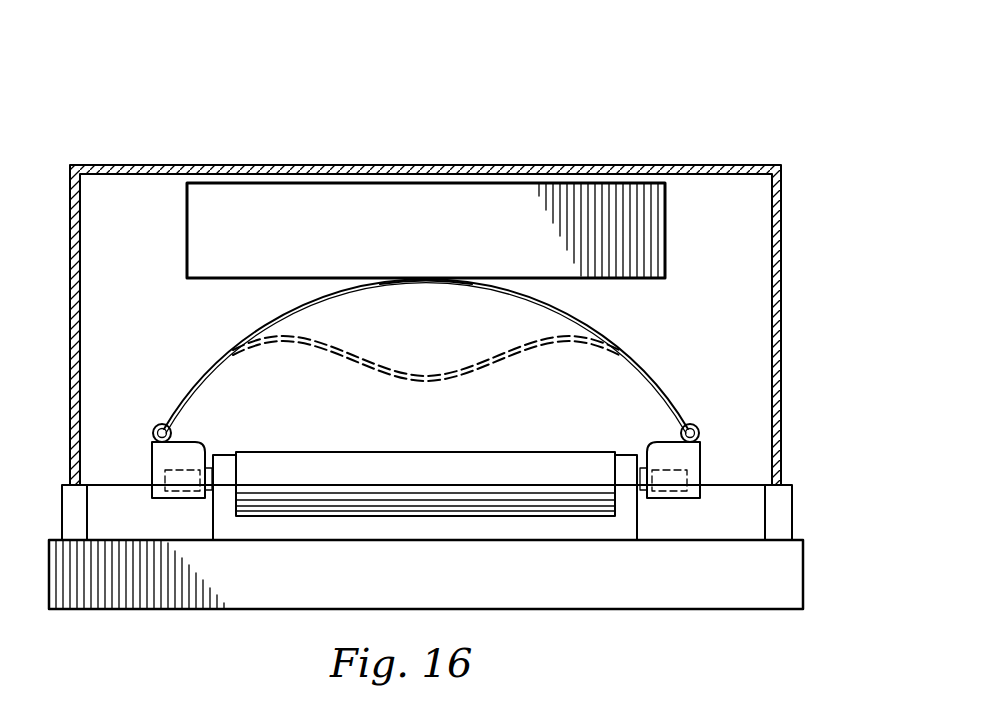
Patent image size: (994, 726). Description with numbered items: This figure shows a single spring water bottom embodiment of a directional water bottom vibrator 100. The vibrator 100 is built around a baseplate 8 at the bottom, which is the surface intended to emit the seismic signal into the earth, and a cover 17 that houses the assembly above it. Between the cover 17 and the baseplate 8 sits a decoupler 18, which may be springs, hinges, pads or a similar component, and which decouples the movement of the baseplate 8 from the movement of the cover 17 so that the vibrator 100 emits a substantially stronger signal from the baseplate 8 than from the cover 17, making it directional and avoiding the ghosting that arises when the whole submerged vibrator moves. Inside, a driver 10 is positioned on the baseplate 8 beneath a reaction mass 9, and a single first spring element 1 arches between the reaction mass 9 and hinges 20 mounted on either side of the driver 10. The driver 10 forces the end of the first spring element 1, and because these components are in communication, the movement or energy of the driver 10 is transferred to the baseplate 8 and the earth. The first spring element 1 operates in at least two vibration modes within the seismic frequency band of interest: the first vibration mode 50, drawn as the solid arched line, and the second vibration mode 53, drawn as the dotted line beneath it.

The water bottom vibrator 100 is at (683, 81).
The cover 17 is at (783, 346).
The decoupler 18 is at (793, 509).
The baseplate 8 is at (804, 577).
The reaction mass 9 is at (666, 229).
The driver 10 is at (533, 451).
The hinges 20 is at (155, 426).
The first spring element 1 is at (580, 320).
The first vibration mode 50 is at (426, 285).
The second vibration mode 53 is at (434, 378).